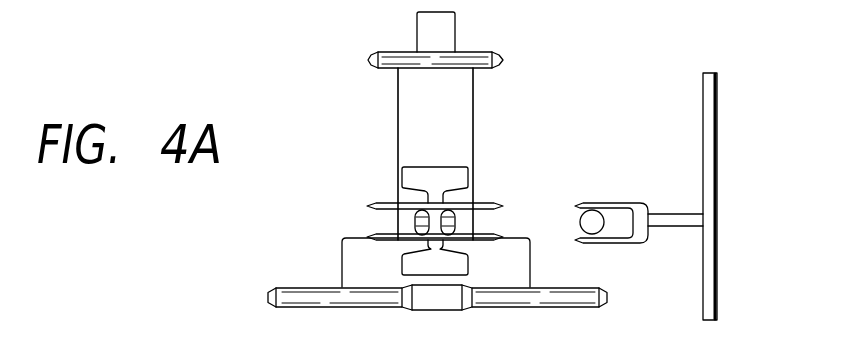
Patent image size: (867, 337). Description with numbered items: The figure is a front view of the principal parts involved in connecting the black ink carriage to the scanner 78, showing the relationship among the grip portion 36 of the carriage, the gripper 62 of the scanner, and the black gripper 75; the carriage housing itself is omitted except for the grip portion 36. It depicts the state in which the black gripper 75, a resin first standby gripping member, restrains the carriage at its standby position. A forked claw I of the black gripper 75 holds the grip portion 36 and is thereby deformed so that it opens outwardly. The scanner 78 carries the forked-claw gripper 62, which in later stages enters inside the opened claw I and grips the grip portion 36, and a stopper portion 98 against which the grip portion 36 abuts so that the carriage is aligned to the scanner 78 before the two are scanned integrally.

The scanner 78 is at (398, 98).
The stopper portion 98 is at (485, 203).
The gripper 62 is at (496, 205).
The black gripper 75 is at (712, 106).
The grip portion 36 is at (598, 225).
The forked claw I is at (610, 200).